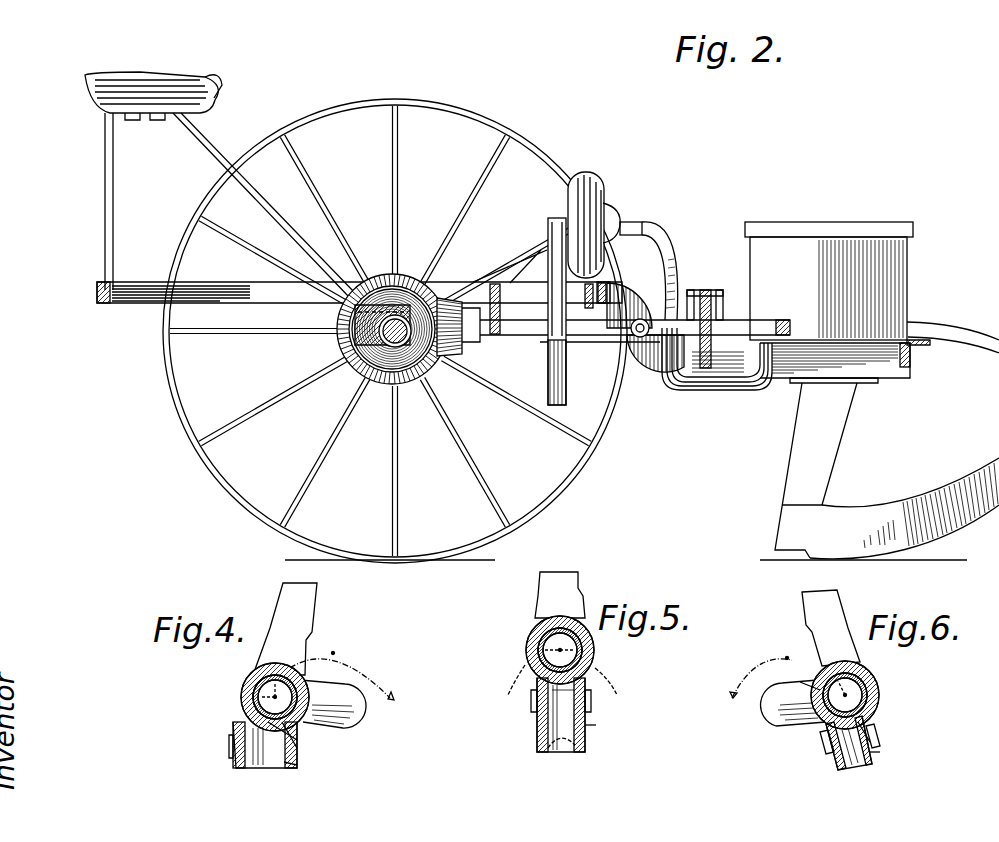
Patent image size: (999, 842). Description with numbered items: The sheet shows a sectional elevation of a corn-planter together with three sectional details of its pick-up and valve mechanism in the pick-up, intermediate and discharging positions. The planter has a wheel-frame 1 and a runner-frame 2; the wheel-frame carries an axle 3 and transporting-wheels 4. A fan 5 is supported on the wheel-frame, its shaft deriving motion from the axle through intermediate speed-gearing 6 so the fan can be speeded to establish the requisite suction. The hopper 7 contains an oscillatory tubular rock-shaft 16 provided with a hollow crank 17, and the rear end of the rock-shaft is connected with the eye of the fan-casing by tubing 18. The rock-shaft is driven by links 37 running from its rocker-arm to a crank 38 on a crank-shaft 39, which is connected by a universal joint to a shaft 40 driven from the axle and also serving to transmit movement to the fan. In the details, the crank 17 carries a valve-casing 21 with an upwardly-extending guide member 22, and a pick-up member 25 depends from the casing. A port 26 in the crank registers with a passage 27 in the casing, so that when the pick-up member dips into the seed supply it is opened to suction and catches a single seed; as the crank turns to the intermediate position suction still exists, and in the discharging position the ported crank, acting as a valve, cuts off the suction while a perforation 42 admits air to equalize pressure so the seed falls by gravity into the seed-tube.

In FIG. 2, the wheel-frame 1 is at (258, 295).
In FIG. 2, the runner-frame 2 is at (912, 362).
In FIG. 2, the axle 3 is at (384, 335).
In FIG. 2, the transporting-wheels 4 is at (400, 104).
In FIG. 2, the fan 5 is at (598, 180).
In FIG. 2, the speed-gearing 6 is at (447, 352).
In FIG. 2, the hopper 7 is at (812, 222).
In FIG. 4, the oscillatory tubular rock-shaft 16 is at (338, 691).
In FIG. 5, the oscillatory tubular rock-shaft 16 is at (540, 750).
In FIG. 6, the oscillatory tubular rock-shaft 16 is at (780, 722).
In FIG. 4, the hollow crank 17 is at (253, 704).
In FIG. 5, the hollow crank 17 is at (545, 650).
In FIG. 6, the hollow crank 17 is at (858, 690).
In FIG. 2, the tubing 18 is at (672, 244).
In FIG. 4, the valve-casing 21 is at (244, 686).
In FIG. 5, the valve-casing 21 is at (529, 638).
In FIG. 6, the valve-casing 21 is at (825, 672).
In FIG. 4, the guide member 22 is at (305, 610).
In FIG. 5, the guide member 22 is at (542, 598).
In FIG. 6, the guide member 22 is at (815, 623).
In FIG. 4, the pick-up member 25 is at (233, 752).
In FIG. 5, the pick-up member 25 is at (537, 728).
In FIG. 6, the pick-up member 25 is at (834, 755).
In FIG. 4, the port 26 is at (300, 730).
In FIG. 5, the port 26 is at (520, 672).
In FIG. 6, the port 26 is at (820, 690).
In FIG. 4, the passage 27 is at (298, 748).
In FIG. 5, the passage 27 is at (588, 682).
In FIG. 6, the passage 27 is at (876, 722).
In FIG. 2, the links 37 is at (715, 298).
In FIG. 2, the crank 38 is at (705, 292).
In FIG. 2, the crank-shaft 39 is at (634, 340).
In FIG. 2, the shaft 40 is at (528, 338).
In FIG. 4, the perforation 42 is at (298, 765).
In FIG. 5, the perforation 42 is at (590, 725).
In FIG. 6, the perforation 42 is at (880, 752).